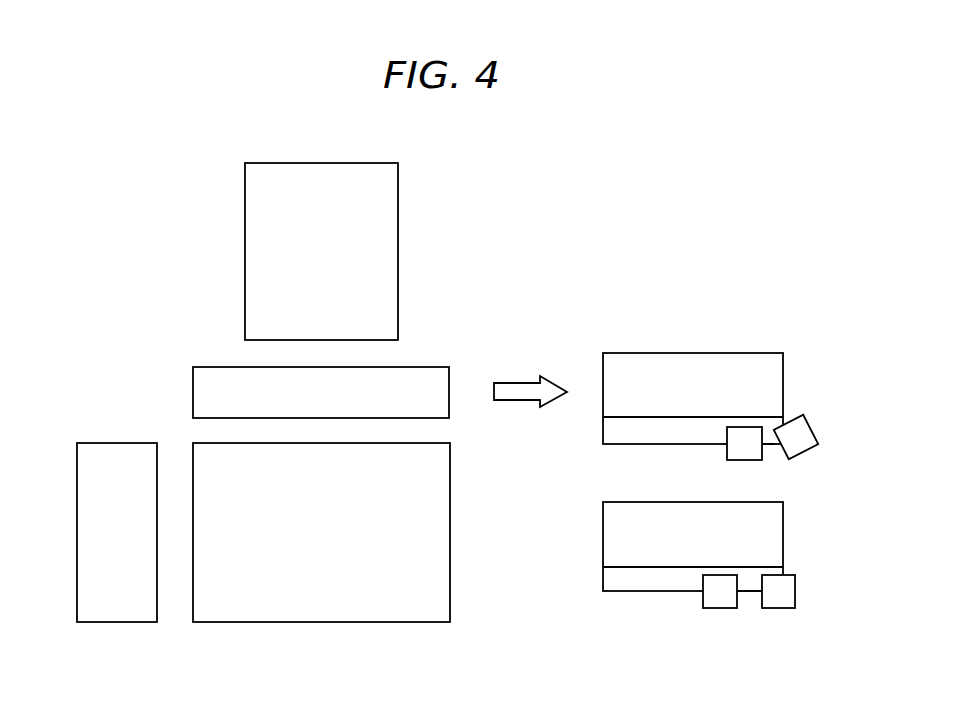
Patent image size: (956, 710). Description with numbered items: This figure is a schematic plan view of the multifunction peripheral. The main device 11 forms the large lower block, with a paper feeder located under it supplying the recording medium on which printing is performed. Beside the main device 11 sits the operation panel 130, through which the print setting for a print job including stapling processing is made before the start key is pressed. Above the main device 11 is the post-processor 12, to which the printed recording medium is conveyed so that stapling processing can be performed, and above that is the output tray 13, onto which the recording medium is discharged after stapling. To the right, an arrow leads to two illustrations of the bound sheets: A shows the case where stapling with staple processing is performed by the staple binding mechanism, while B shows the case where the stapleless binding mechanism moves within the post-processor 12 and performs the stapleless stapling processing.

The main device 11 is at (403, 622).
The post-processor 12 is at (423, 367).
The output tray 13 is at (354, 163).
The operation panel 130 is at (125, 622).
The stapling with staple processing illustration A is at (753, 353).
The stapleless stapling processing illustration B is at (753, 502).